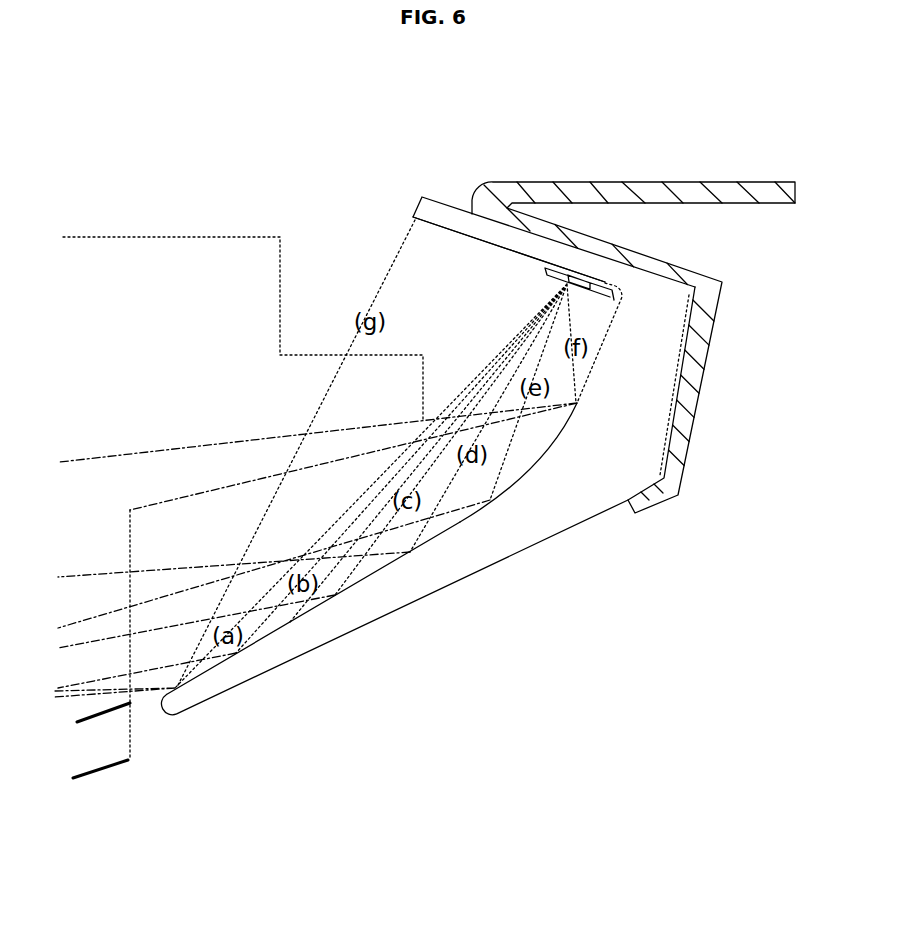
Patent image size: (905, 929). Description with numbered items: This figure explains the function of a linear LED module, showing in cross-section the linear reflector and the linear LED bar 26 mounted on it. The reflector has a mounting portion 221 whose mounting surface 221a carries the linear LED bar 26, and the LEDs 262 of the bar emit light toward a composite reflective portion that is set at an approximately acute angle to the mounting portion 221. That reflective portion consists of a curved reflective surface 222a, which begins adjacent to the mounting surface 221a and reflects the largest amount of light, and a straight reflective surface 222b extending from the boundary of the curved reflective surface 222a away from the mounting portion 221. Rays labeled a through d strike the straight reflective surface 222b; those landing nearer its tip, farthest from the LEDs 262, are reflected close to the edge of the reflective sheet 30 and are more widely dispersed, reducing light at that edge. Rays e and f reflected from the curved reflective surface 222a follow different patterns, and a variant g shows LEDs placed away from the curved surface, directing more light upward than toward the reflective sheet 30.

The mounting portion 221 is at (417, 208).
The mounting surface 221a is at (480, 240).
The linear LED bar 26 is at (528, 293).
The LEDs 262 is at (582, 290).
The curved reflective surface 222a is at (517, 475).
The straight reflective surface 222b is at (313, 610).
The reflective sheet 30 is at (115, 753).